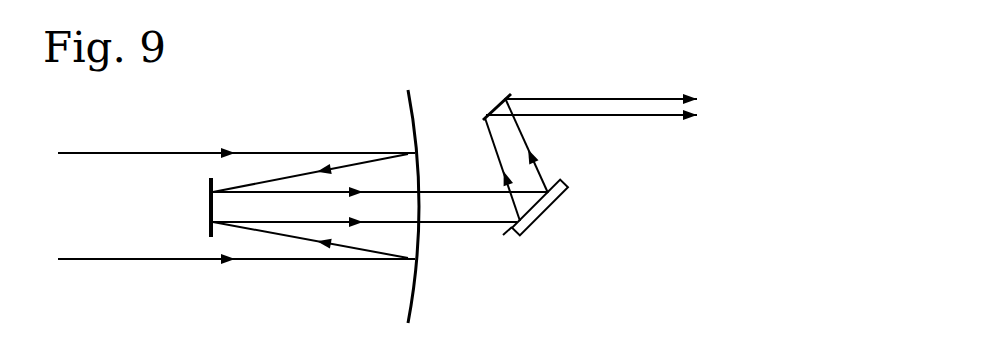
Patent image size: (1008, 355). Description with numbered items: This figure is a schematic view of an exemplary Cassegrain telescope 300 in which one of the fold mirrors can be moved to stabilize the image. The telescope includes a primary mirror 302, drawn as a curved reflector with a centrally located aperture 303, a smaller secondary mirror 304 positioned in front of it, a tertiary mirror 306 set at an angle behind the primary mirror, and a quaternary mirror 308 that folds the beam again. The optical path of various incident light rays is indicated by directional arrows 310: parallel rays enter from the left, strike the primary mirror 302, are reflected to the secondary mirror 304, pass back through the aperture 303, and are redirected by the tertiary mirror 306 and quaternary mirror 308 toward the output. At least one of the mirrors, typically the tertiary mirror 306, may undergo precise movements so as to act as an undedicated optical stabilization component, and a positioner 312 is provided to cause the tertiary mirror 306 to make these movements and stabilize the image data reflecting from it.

The Cassegrain telescope 300 is at (640, 34).
The primary mirror 302 is at (413, 118).
The aperture 303 is at (418, 226).
The secondary mirror 304 is at (208, 212).
The tertiary mirror 306 is at (560, 180).
The quaternary mirror 308 is at (496, 97).
The directional arrows 310 is at (261, 152).
The positioner 312 is at (542, 218).